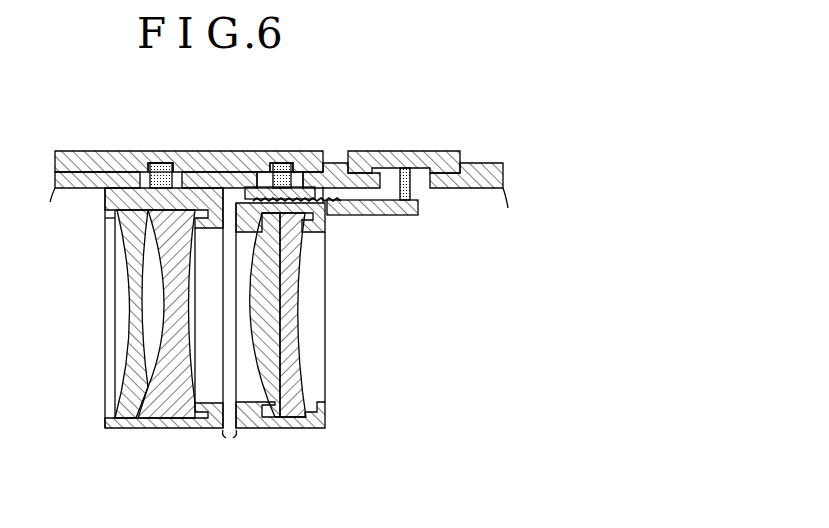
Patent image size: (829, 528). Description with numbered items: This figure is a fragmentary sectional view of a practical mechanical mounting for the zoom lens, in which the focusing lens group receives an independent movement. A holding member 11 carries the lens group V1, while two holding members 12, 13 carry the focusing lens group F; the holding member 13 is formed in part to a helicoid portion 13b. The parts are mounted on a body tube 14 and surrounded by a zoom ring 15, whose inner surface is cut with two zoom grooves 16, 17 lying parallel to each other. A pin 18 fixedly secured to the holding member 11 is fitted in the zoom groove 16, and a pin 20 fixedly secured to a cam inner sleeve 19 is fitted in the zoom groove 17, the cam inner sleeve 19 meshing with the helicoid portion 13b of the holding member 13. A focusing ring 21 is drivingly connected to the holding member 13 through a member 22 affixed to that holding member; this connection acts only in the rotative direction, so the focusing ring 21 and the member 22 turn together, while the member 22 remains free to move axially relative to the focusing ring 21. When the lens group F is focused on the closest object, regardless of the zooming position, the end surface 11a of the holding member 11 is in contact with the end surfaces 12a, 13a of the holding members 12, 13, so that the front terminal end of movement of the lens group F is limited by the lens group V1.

The holding member 11 is at (107, 214).
The end surface of holding member 11a is at (215, 191).
The holding member 12 is at (297, 430).
The end surface of holding member 12a is at (236, 429).
The holding member 13 is at (381, 212).
The end surface of holding member 13a is at (237, 190).
The helicoid portion 13b is at (326, 216).
The body tube 14 is at (67, 190).
The zoom ring 15 is at (101, 152).
The zoom groove 16 is at (175, 162).
The zoom groove 17 is at (299, 160).
The pin 18 is at (152, 163).
The cam inner sleeve 19 is at (260, 160).
The pin 20 is at (280, 163).
The focusing ring 21 is at (406, 158).
The member 22 is at (411, 192).
The lens group V1 is at (130, 330).
The focusing lens group F is at (302, 310).